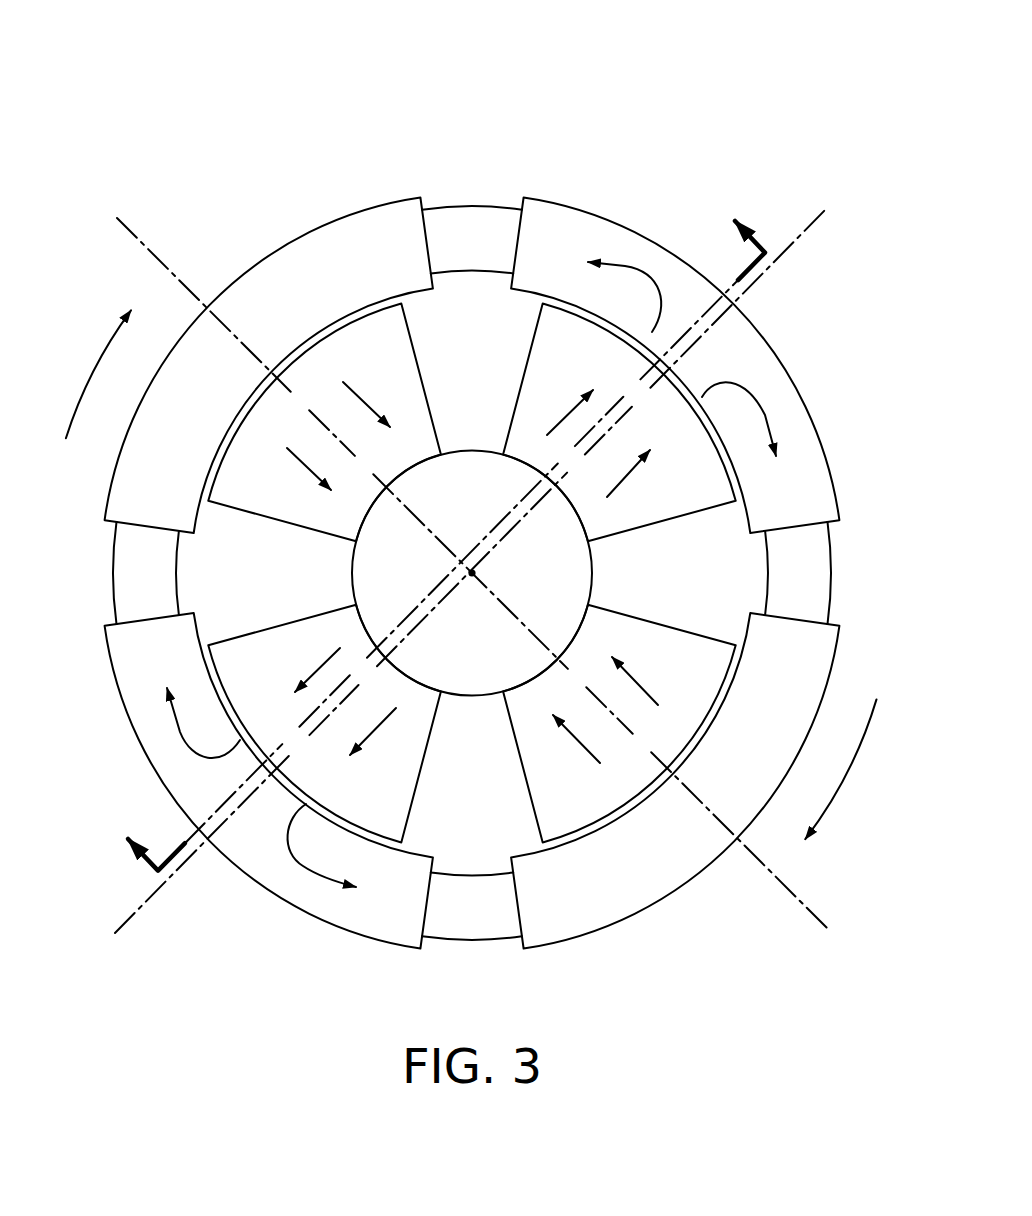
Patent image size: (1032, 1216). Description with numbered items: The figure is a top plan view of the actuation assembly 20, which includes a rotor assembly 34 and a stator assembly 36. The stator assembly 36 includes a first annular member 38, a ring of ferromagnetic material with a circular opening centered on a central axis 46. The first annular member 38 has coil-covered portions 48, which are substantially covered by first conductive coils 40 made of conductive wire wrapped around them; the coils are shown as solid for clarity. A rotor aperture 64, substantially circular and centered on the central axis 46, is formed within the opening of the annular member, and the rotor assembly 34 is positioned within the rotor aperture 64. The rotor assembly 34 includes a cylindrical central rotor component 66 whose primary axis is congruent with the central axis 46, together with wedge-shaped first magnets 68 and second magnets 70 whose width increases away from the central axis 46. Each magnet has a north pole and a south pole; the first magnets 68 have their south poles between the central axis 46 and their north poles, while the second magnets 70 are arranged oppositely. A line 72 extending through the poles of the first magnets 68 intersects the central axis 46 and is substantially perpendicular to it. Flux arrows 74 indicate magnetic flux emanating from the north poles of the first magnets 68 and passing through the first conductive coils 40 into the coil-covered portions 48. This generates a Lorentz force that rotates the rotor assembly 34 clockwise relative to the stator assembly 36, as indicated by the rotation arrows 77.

The actuation assembly 20 is at (186, 118).
The rotor assembly 34 is at (614, 570).
The stator assembly 36 is at (561, 192).
The first annular member 38 is at (442, 203).
The first conductive coils 40 is at (352, 212).
The central axis 46 is at (472, 581).
The coil-covered portions 48 is at (261, 289).
The rotor aperture 64 is at (195, 572).
The central rotor component 66 is at (472, 451).
The first magnets 68 is at (663, 392).
The second magnets 70 is at (412, 376).
The line 72 is at (811, 225).
The flux arrows 74 is at (359, 388).
The rotation arrows 77 is at (82, 398).